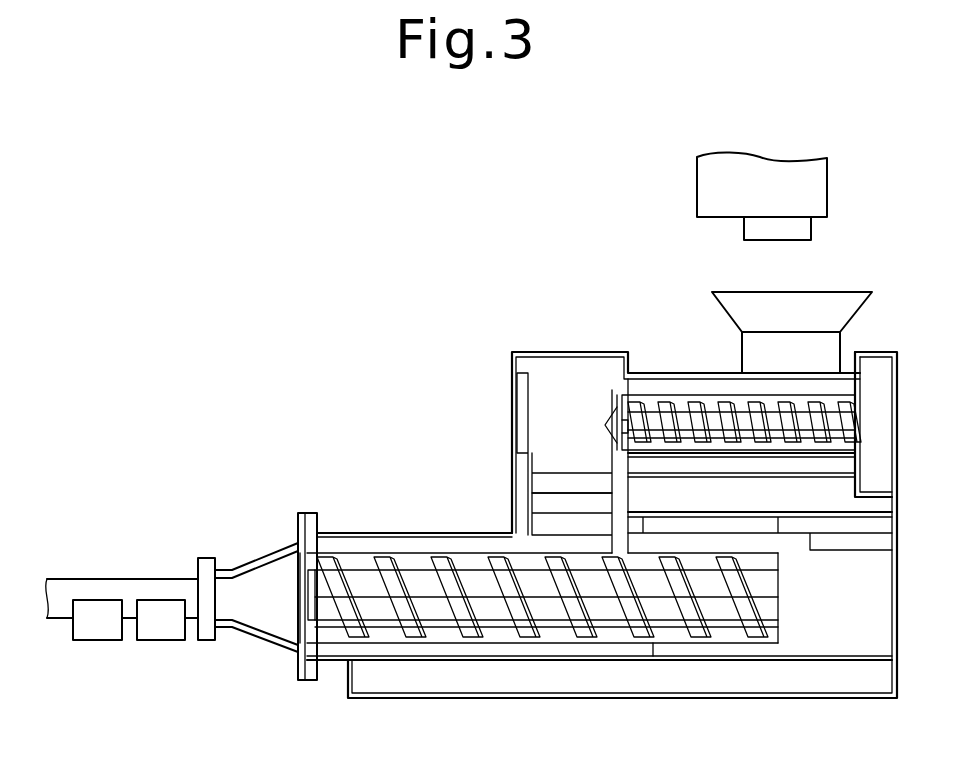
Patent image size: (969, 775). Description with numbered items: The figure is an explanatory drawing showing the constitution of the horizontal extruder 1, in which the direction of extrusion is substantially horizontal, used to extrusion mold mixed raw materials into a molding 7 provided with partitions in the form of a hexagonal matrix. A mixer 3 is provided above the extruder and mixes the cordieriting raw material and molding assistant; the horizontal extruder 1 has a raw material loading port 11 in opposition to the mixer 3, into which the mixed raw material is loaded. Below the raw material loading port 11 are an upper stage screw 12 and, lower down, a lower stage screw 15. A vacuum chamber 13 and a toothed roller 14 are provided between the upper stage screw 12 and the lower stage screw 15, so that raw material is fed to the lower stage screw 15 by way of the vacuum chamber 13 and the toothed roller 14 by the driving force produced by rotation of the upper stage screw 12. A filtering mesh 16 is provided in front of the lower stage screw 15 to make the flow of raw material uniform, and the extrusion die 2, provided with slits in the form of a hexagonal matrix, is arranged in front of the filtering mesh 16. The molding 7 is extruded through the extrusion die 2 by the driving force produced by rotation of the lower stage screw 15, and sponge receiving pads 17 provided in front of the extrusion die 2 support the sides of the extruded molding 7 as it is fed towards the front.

The horizontal extruder 1 is at (432, 355).
The extrusion die 2 is at (207, 570).
The mixer 3 is at (718, 187).
The molding 7 is at (72, 588).
The raw material loading port 11 is at (737, 311).
The upper stage screw 12 is at (682, 410).
The vacuum chamber 13 is at (563, 378).
The toothed roller 14 is at (545, 487).
The lower stage screw 15 is at (652, 588).
The filtering mesh 16 is at (297, 612).
The sponge receiving pads 17 is at (160, 623).